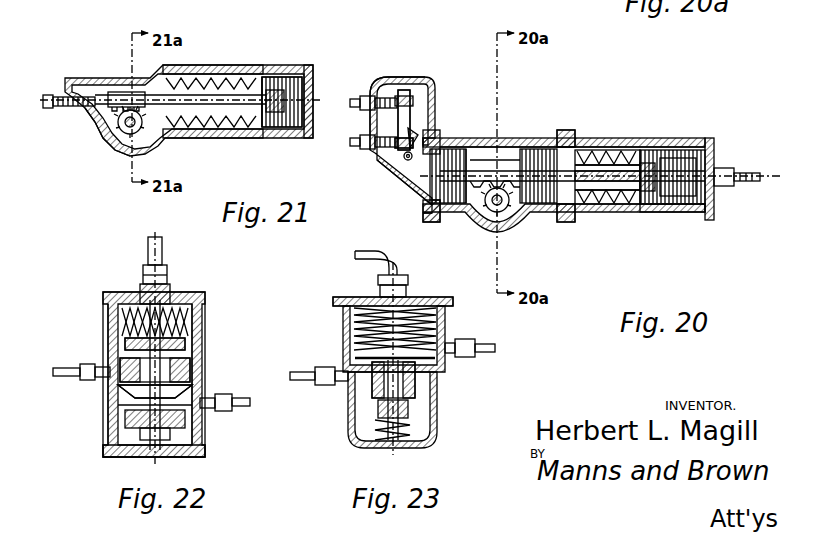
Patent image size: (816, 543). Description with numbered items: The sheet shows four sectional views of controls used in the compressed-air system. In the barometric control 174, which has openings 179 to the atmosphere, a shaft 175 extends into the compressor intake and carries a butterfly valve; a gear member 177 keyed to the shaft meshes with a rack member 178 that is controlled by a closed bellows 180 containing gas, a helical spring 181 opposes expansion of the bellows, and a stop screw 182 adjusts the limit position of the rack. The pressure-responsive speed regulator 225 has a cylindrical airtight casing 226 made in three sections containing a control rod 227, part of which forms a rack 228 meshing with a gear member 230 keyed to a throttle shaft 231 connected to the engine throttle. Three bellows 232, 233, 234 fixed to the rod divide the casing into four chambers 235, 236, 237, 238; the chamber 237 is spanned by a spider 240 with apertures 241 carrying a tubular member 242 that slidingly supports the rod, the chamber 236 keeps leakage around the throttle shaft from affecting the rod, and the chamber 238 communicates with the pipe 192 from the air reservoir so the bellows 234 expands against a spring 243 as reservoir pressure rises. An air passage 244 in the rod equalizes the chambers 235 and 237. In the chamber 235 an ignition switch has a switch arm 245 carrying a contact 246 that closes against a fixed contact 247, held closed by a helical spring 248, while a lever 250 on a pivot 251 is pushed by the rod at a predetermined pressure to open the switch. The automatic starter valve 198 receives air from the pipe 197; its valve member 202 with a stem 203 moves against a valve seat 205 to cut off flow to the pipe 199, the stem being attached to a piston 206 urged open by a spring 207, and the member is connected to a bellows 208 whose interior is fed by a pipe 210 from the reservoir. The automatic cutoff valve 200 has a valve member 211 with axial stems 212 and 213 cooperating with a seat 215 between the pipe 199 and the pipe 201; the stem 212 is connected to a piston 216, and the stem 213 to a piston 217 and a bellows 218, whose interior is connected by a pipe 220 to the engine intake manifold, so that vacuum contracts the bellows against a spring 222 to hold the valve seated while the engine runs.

In FIG. 21, the barometric control 174 is at (212, 64).
In FIG. 21, the shaft 175 is at (105, 140).
In FIG. 21, the gear member 177 is at (145, 128).
In FIG. 21, the rack member 178 is at (127, 92).
In FIG. 21, the openings 179 is at (210, 72).
In FIG. 21, the closed bellows 180 is at (282, 122).
In FIG. 21, the helical spring 181 is at (262, 68).
In FIG. 21, the stop screw 182 is at (46, 95).
In FIG. 20, the pipe 192 is at (746, 170).
In FIG. 23, the pipe 197 is at (494, 348).
In FIG. 23, the automatic starter valve 198 is at (352, 298).
In FIG. 22, the pipe 199 is at (230, 410).
In FIG. 23, the pipe 199 is at (296, 372).
In FIG. 22, the automatic cutoff valve 200 is at (106, 294).
In FIG. 22, the pipe 201 is at (76, 366).
In FIG. 23, the valve member 202 is at (420, 385).
In FIG. 23, the stem 203 is at (385, 384).
In FIG. 23, the valve seat 205 is at (436, 366).
In FIG. 23, the piston 206 is at (420, 416).
In FIG. 23, the spring 207 is at (376, 430).
In FIG. 23, the bellows 208 is at (346, 320).
In FIG. 23, the pipe 210 is at (353, 255).
In FIG. 22, the valve member 211 is at (112, 415).
In FIG. 22, the valve stem 212 is at (200, 425).
In FIG. 22, the valve stem 213 is at (168, 375).
In FIG. 22, the seat 215 is at (112, 390).
In FIG. 22, the piston 216 is at (108, 459).
In FIG. 22, the piston 217 is at (112, 338).
In FIG. 22, the bellows 218 is at (192, 334).
In FIG. 22, the pipe 220 is at (146, 250).
In FIG. 22, the spring 222 is at (200, 310).
In FIG. 20, the pressure-responsive speed regulator 225 is at (682, 142).
In FIG. 20, the cylindrical airtight casing 226 is at (700, 145).
In FIG. 20, the control rod 227 is at (588, 148).
In FIG. 20, the rack 228 is at (468, 205).
In FIG. 20, the gear member 230 is at (490, 222).
In FIG. 20, the throttle shaft 231 is at (510, 222).
In FIG. 20, the bellows 232 is at (442, 220).
In FIG. 20, the bellows 233 is at (548, 214).
In FIG. 20, the bellows 234 is at (690, 212).
In FIG. 20, the chamber 235 is at (410, 188).
In FIG. 20, the chamber 236 is at (505, 150).
In FIG. 20, the chamber 237 is at (578, 132).
In FIG. 20, the chamber 238 is at (700, 186).
In FIG. 20, the spider 240 is at (590, 212).
In FIG. 20, the apertures 241 is at (582, 132).
In FIG. 20, the tubular member 242 is at (642, 146).
In FIG. 20, the spring 243 is at (627, 212).
In FIG. 20, the air passage 244 is at (470, 165).
In FIG. 20, the switch arm 245 is at (372, 163).
In FIG. 20, the contact 246 is at (404, 92).
In FIG. 20, the fixed contact 247 is at (385, 80).
In FIG. 20, the helical spring 248 is at (412, 126).
In FIG. 20, the lever 250 is at (414, 110).
In FIG. 20, the pivot 251 is at (420, 135).